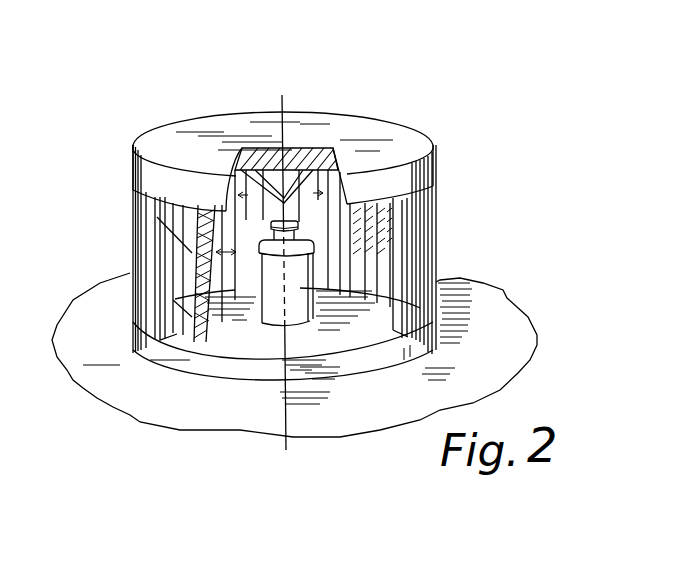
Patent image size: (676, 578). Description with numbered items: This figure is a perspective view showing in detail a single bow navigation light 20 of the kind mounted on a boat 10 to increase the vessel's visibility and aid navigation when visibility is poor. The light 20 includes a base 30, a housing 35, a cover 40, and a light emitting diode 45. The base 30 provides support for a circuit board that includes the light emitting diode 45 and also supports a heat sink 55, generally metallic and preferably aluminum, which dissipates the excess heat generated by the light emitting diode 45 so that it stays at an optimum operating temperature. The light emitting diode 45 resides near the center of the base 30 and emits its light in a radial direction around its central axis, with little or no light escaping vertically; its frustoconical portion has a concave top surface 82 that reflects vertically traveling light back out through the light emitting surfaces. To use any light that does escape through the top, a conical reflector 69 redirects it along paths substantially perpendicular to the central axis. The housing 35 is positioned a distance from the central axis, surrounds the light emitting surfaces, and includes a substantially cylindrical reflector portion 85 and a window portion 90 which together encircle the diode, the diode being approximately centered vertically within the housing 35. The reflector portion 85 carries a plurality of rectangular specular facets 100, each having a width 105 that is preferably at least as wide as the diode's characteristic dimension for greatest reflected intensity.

The boat 10 is at (518, 338).
The bow navigation light 20 is at (498, 85).
The base 30 is at (257, 372).
The housing 35 is at (438, 218).
The cover 40 is at (234, 124).
The light emitting diode 45 is at (263, 326).
The heat sink 55 is at (293, 310).
The conical reflector 69 is at (334, 172).
The concave top surface 82 is at (287, 223).
The reflector portion 85 is at (148, 208).
The window portion 90 is at (182, 342).
The specular facets 100 is at (240, 220).
The width 105 is at (222, 298).